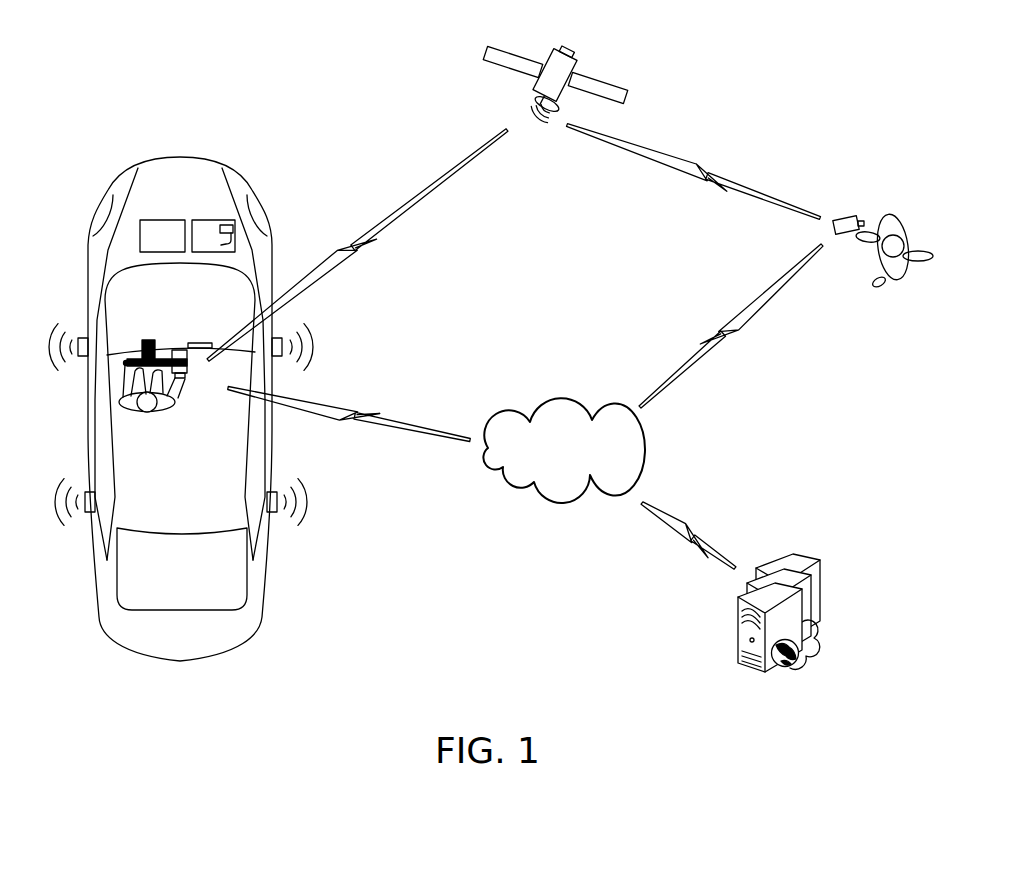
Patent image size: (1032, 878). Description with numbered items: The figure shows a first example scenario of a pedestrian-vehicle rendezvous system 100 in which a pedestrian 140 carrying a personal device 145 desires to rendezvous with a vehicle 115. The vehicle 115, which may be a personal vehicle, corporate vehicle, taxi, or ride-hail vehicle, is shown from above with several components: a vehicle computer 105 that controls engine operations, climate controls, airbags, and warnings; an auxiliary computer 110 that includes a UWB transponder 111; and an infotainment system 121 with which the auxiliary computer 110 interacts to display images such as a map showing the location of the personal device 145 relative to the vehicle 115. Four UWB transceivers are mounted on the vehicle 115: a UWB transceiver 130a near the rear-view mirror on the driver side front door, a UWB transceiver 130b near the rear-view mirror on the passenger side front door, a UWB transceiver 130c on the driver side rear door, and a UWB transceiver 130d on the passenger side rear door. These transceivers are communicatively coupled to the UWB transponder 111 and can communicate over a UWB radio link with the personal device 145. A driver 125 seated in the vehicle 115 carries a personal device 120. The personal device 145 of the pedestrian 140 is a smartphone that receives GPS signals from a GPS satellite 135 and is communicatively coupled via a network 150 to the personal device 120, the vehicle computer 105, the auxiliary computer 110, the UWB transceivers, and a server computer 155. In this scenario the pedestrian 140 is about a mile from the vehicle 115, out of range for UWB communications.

The pedestrian-vehicle rendezvous system 100 is at (853, 66).
The vehicle computer 105 is at (162, 236).
The auxiliary computer 110 is at (217, 220).
The UWB transponder 111 is at (213, 238).
The vehicle 115 is at (121, 146).
The personal device 120 is at (189, 365).
The infotainment system 121 is at (205, 342).
The driver 125 is at (155, 412).
The UWB transceiver 130a is at (80, 357).
The UWB transceiver 130b is at (282, 357).
The UWB transceiver 130c is at (86, 512).
The UWB transceiver 130d is at (276, 512).
The GPS satellite 135 is at (614, 73).
The pedestrian 140 is at (885, 201).
The personal device 145 is at (848, 212).
The network 150 is at (564, 450).
The server computer 155 is at (728, 634).